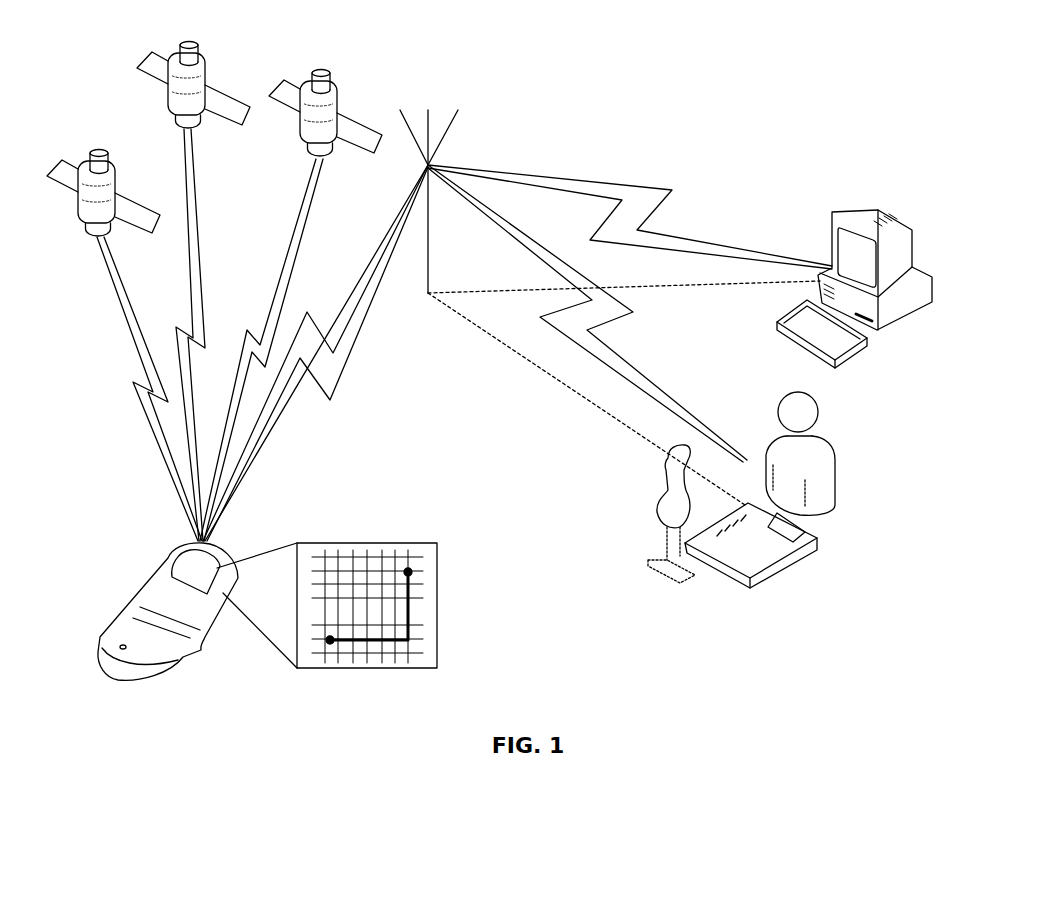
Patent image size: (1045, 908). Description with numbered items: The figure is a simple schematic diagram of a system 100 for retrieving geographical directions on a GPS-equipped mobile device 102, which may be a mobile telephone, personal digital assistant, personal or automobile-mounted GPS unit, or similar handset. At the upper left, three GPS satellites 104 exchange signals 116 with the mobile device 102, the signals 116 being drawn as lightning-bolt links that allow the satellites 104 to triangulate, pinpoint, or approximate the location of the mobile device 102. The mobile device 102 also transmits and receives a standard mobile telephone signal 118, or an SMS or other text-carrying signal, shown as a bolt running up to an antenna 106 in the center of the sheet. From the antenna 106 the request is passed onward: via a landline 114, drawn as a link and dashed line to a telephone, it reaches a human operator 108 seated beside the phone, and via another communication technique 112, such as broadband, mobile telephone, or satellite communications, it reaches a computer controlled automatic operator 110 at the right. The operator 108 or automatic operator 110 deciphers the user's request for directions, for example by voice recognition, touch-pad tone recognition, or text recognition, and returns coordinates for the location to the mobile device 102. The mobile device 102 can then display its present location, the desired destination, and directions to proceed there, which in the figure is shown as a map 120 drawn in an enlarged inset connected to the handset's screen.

The system 100 is at (598, 98).
The mobile device 102 is at (172, 562).
The GPS satellites 104 is at (197, 53).
The antenna 106 is at (432, 257).
The operator 108 is at (820, 436).
The computer controlled automatic operator 110 is at (838, 212).
The other communication technique 112 is at (720, 250).
The landline 114 is at (612, 418).
The signals 116 is at (203, 300).
The mobile telephone signal 118 is at (337, 385).
The map 120 is at (392, 543).